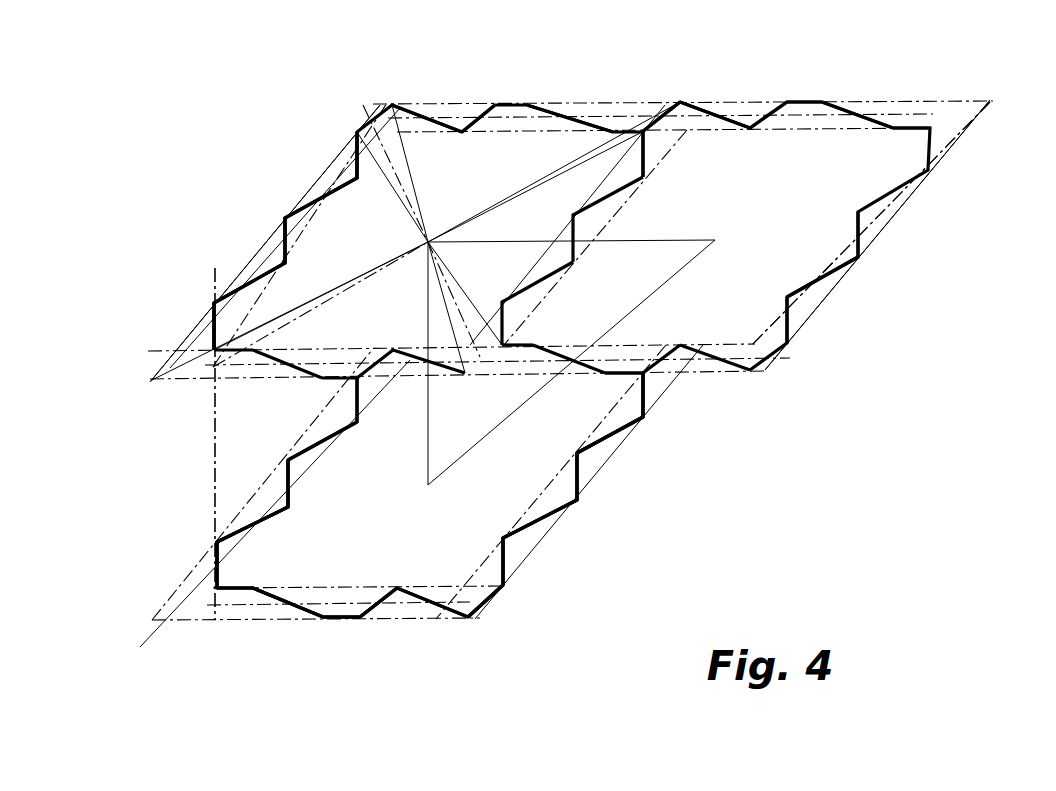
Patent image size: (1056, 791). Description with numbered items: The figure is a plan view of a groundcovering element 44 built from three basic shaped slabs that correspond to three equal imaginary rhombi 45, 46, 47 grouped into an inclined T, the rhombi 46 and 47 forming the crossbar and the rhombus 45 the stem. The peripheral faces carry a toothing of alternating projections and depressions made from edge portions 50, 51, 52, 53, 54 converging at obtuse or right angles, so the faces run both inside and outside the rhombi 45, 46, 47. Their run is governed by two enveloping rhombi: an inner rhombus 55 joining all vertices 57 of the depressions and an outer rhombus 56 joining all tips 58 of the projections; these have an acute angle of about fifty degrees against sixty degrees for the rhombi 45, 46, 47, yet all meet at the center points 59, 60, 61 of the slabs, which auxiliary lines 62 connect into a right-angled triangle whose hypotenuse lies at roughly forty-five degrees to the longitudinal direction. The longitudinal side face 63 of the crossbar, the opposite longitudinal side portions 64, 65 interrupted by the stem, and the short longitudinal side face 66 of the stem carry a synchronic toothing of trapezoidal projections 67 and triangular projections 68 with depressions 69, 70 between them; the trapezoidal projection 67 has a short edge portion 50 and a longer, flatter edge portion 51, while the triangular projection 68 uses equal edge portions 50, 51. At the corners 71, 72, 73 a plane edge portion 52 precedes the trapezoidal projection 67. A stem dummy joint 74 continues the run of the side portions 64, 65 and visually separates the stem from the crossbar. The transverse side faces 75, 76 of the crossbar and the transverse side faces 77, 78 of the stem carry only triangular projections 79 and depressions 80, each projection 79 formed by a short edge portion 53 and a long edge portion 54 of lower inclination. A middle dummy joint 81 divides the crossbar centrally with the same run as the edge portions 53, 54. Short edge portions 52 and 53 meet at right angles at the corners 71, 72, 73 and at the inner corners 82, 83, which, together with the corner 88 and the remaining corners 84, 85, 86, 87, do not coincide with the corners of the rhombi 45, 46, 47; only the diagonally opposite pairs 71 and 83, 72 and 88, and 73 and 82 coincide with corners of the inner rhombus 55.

The groundcovering element 44 is at (147, 487).
The rhombus 45 is at (474, 179).
The rhombus 46 is at (827, 174).
The rhombus 47 is at (539, 451).
The edge portion 50 is at (370, 368).
The edge portion 51 is at (428, 368).
The plane edge portion 52 is at (523, 345).
The short edge portion 53 is at (355, 400).
The long edge portion 54 is at (305, 445).
The inner rhombus 55 is at (333, 200).
The outer rhombus 56 is at (455, 103).
The vertices of the depressions 57 is at (284, 250).
The tips of the projections 58 is at (214, 303).
The center point 59 is at (428, 242).
The center point 60 is at (715, 240).
The center point 61 is at (432, 487).
The auxiliary lines 62 is at (638, 232).
The longitudinal side face 63 is at (668, 105).
The longitudinal side portion 64 is at (255, 383).
The longitudinal side portion 65 is at (722, 378).
The short longitudinal side face 66 is at (340, 690).
The trapezoidal projection 67 is at (525, 113).
The triangular projection 68 is at (413, 108).
The depression 69 is at (890, 108).
The depression 70 is at (795, 112).
The corner 71 is at (993, 100).
The corner 72 is at (214, 350).
The corner 73 is at (213, 590).
The stem dummy joint 74 is at (592, 374).
The transverse side face 75 is at (882, 245).
The transverse side face 76 is at (228, 245).
The transverse side face 77 is at (680, 543).
The transverse side face 78 is at (215, 480).
The triangular projection 79 is at (860, 258).
The depression 80 is at (875, 213).
The middle dummy joint 81 is at (645, 152).
The inner corner 82 is at (655, 378).
The inner corner 83 is at (502, 345).
The corner 84 is at (788, 343).
The corner 85 is at (355, 128).
The corner 86 is at (507, 587).
The corner 87 is at (335, 378).
The corner 88 is at (632, 88).